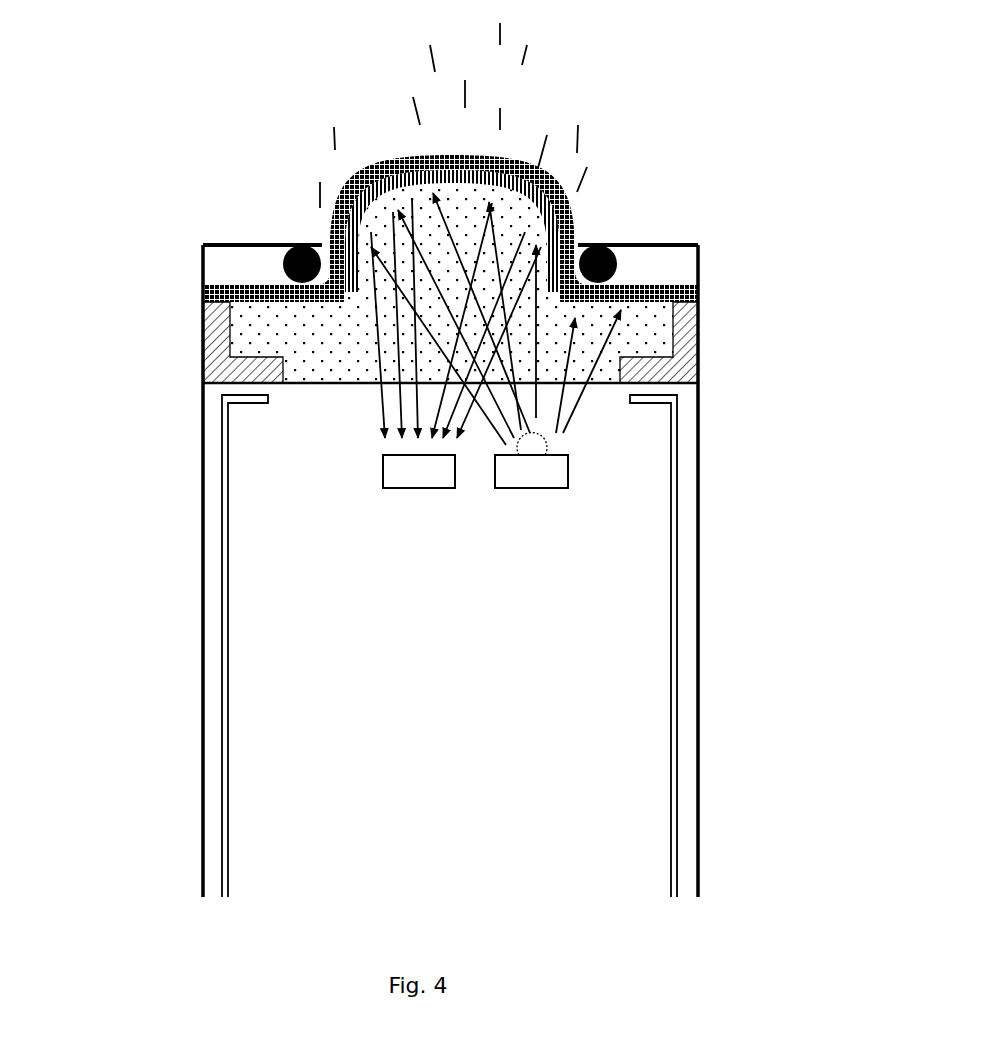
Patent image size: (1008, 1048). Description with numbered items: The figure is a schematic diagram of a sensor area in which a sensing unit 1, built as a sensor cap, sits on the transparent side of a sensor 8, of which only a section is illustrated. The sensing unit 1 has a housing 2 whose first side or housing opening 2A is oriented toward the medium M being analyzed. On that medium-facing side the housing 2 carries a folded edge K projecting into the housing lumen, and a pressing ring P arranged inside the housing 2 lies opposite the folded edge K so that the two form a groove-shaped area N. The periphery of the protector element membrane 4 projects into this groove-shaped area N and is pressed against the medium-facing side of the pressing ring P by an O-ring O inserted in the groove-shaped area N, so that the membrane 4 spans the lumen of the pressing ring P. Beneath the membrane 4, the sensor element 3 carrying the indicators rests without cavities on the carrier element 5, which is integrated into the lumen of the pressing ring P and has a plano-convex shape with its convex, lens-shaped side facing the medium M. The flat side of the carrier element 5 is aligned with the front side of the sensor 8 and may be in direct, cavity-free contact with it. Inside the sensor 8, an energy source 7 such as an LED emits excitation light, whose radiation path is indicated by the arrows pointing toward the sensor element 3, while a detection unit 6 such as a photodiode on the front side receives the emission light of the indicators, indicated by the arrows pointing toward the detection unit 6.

The sensing unit 1 is at (188, 745).
The housing 2 is at (203, 585).
The first housing opening 2A is at (577, 233).
The sensor element 3 is at (366, 196).
The protector element membrane 4 is at (420, 168).
The carrier element 5 is at (250, 334).
The detection unit 6 is at (422, 489).
The energy source 7 is at (540, 490).
The sensor 8 is at (225, 510).
The medium M is at (519, 134).
The folded edge K is at (646, 245).
The groove-shaped area N is at (680, 273).
The O-ring O is at (290, 250).
The pressing ring P is at (683, 350).